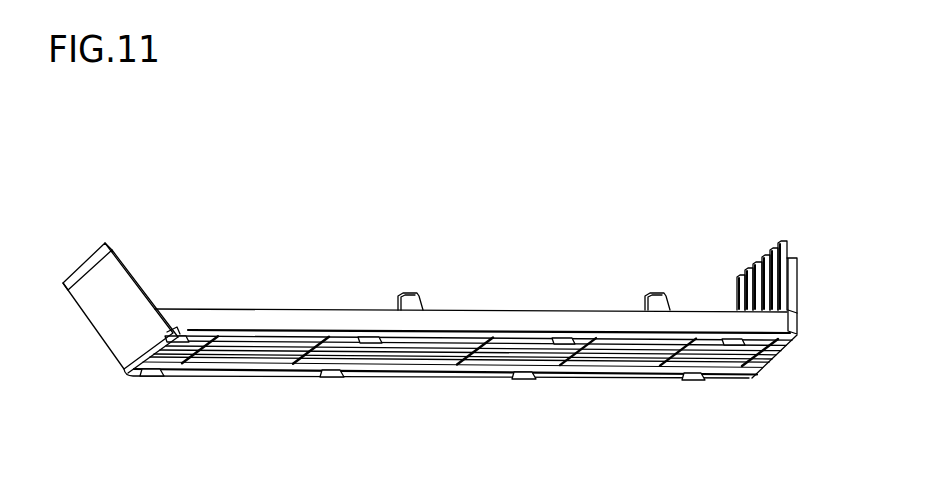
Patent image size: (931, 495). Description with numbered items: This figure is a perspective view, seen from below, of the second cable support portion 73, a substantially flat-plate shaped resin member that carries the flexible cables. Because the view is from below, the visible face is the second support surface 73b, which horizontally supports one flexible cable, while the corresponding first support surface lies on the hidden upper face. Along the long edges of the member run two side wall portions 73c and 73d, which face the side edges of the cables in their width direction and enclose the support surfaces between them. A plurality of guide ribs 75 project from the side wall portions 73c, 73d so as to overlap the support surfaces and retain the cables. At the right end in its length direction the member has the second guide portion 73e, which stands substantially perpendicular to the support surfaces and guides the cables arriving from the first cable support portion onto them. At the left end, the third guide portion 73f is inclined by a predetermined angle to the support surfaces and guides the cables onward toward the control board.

The second cable support portion 73 is at (412, 313).
The second support surface 73b is at (244, 362).
The side wall portion 73c is at (390, 374).
The side wall portion 73d is at (290, 313).
The second guide portion 73e is at (763, 258).
The third guide portion 73f is at (86, 284).
The guide ribs 75 is at (187, 337).